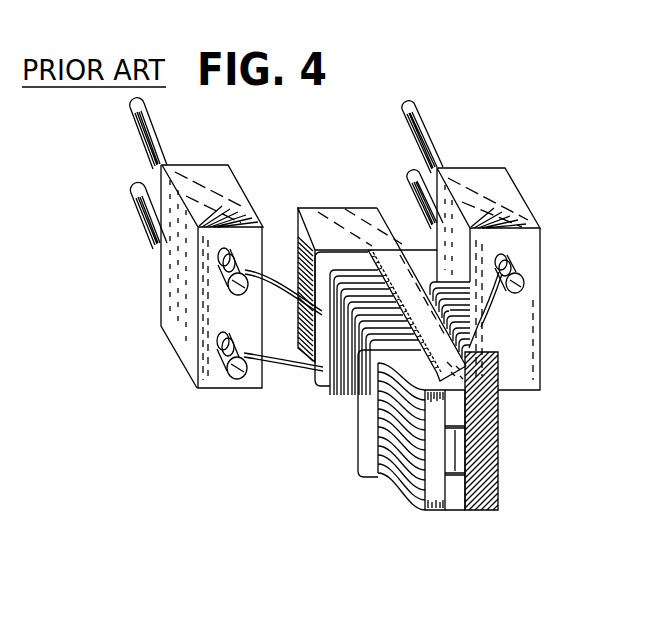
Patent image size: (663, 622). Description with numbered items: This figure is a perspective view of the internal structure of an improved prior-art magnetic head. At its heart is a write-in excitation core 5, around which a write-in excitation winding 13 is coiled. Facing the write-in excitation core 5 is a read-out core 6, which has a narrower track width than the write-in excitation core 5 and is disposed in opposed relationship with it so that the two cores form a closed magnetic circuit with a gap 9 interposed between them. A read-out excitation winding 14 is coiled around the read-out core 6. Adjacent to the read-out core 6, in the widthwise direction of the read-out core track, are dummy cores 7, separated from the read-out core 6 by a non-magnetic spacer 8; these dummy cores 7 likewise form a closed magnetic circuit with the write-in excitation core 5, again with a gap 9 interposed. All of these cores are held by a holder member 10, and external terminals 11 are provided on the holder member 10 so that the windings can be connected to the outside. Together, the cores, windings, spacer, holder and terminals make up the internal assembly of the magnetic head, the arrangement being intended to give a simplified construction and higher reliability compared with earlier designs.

The write-in excitation core 5 is at (430, 415).
The read-out core 6 is at (457, 462).
The dummy cores 7 is at (460, 408).
The non-magnetic spacer 8 is at (442, 430).
The gap 9 is at (445, 508).
The holder member 10 is at (488, 178).
The external terminals 11 is at (406, 125).
The write-in excitation winding 13 is at (343, 391).
The read-out excitation winding 14 is at (470, 330).